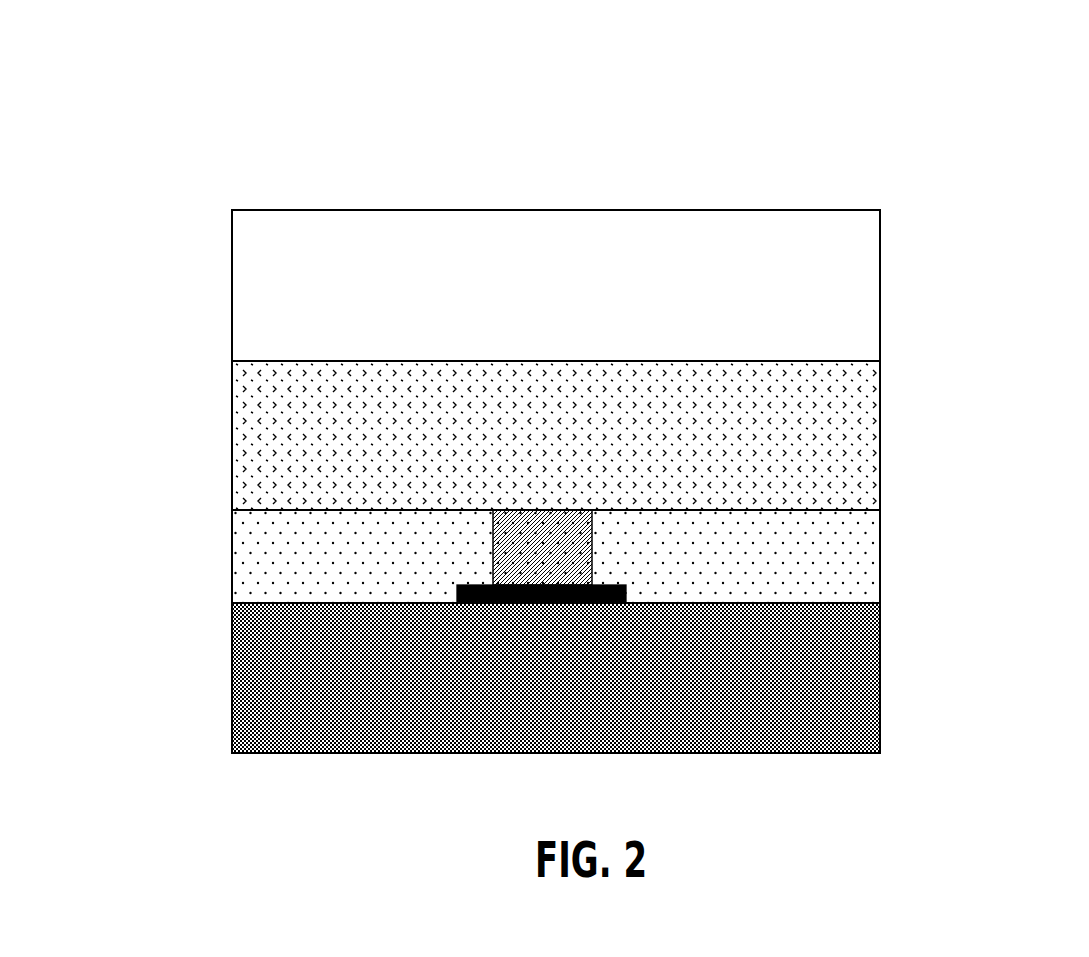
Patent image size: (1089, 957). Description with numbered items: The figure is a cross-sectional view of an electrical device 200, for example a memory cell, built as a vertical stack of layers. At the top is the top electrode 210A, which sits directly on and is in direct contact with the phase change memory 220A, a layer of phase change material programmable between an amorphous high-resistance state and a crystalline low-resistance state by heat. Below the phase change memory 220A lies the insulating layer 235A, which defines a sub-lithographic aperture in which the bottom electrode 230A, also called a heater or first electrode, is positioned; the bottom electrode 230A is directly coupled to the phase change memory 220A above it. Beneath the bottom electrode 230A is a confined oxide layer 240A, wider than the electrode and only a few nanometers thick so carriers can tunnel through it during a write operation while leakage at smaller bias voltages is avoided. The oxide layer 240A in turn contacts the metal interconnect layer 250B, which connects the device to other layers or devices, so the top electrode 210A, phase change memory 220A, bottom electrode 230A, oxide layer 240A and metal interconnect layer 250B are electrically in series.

The electrical device 200 is at (108, 80).
The top electrode 210A is at (556, 285).
The phase change memory 220A is at (556, 435).
The bottom electrode 230A is at (542, 547).
The insulating layer 235A is at (880, 530).
The oxide layer 240A is at (627, 588).
The metal interconnect layer 250B is at (556, 678).